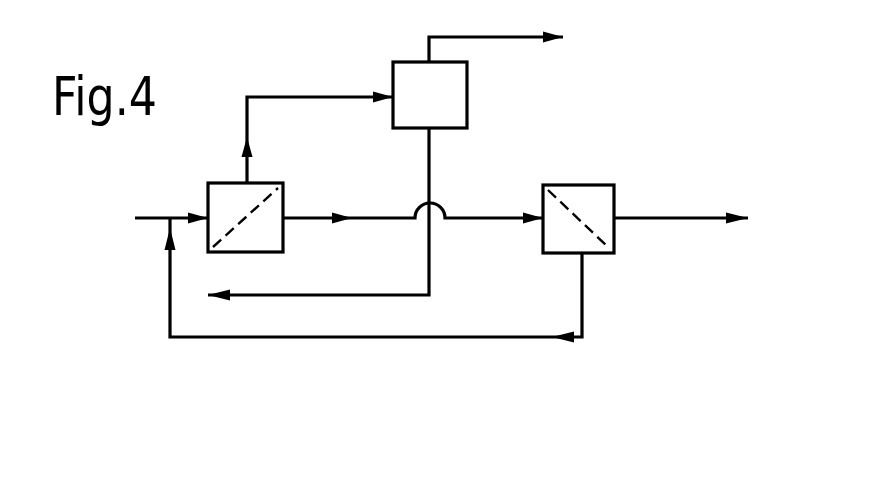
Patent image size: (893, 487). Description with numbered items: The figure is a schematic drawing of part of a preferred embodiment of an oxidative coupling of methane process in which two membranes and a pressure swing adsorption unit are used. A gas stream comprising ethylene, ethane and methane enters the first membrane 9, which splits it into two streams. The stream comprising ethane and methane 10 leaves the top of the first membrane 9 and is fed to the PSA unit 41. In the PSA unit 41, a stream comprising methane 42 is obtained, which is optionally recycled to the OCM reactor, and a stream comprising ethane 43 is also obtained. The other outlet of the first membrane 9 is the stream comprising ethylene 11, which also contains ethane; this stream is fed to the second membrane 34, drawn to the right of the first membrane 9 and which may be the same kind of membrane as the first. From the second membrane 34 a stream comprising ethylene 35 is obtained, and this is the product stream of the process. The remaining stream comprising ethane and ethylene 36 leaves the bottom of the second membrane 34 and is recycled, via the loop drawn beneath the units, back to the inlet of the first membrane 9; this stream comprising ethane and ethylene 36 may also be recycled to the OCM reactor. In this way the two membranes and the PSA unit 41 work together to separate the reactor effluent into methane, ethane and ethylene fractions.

The membrane 9 is at (245, 202).
The stream comprising ethane and methane 10 is at (318, 122).
The stream comprising ethylene 11 is at (413, 205).
The second membrane 34 is at (578, 204).
The stream comprising ethylene 35 is at (681, 205).
The stream comprising ethane and ethylene 36 is at (396, 281).
The PSA unit 41 is at (430, 95).
The stream comprising methane 42 is at (496, 34).
The stream comprising ethane 43 is at (340, 214).